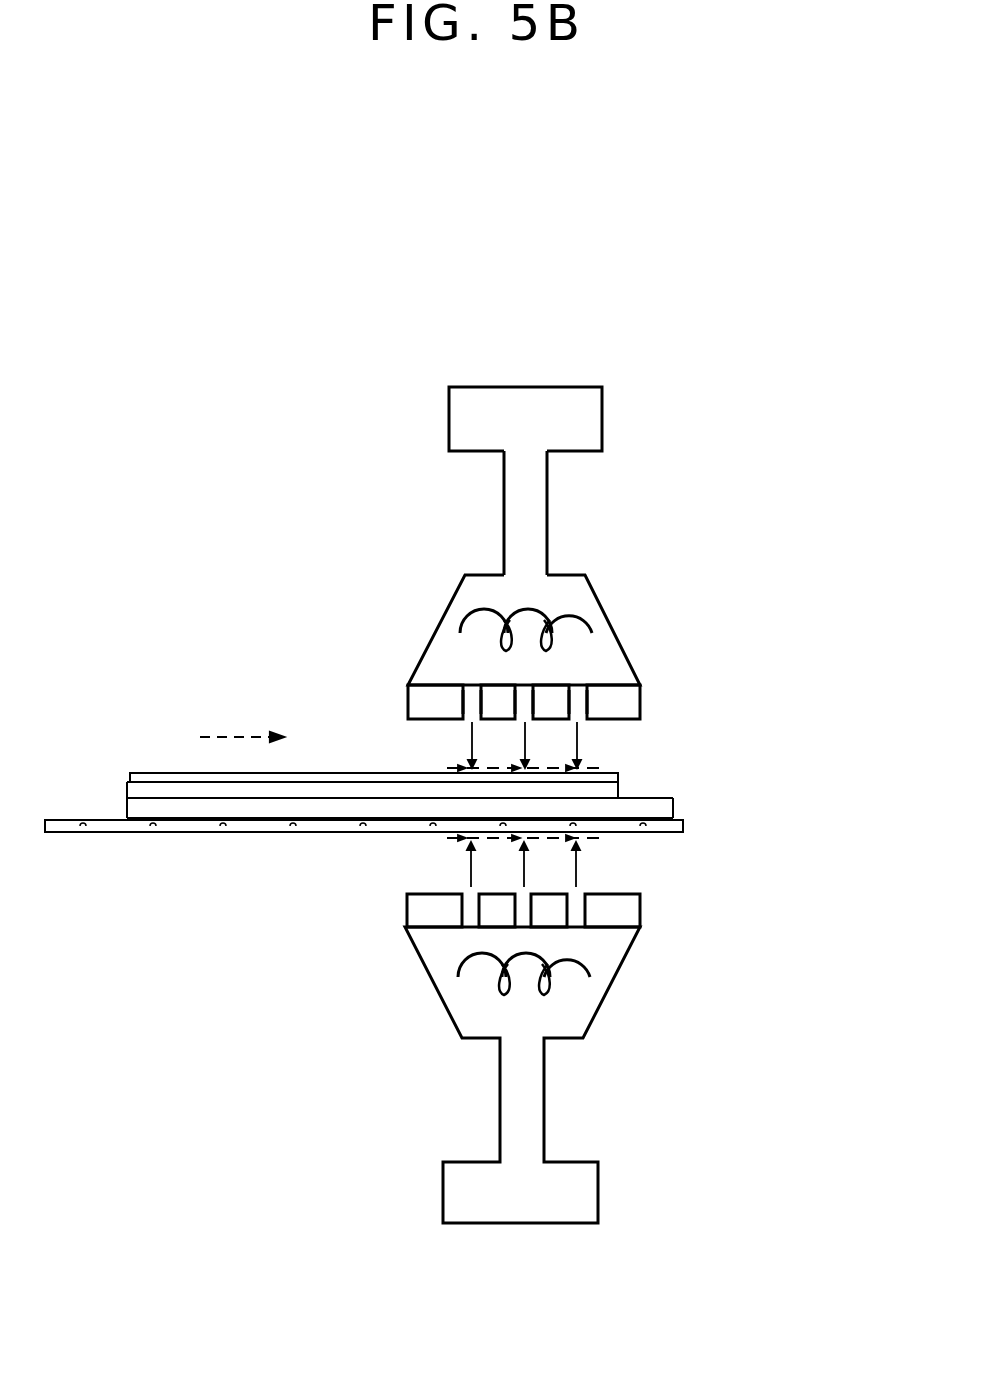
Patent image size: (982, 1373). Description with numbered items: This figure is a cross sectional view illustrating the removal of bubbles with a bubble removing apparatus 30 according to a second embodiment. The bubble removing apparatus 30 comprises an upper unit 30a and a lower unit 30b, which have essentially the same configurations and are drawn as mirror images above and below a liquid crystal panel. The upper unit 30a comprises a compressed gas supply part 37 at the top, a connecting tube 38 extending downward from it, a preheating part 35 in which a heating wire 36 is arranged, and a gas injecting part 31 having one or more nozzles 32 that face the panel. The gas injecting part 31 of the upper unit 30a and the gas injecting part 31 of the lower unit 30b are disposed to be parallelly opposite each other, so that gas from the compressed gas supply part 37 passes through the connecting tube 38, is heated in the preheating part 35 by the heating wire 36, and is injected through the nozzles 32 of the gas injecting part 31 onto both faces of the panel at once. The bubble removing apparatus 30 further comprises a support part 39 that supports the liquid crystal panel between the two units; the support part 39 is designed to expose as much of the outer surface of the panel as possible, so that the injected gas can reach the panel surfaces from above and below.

The bubble removing apparatus 30 is at (627, 805).
The upper unit 30a is at (600, 579).
The lower unit 30b is at (599, 1029).
The gas injecting part 31 is at (640, 693).
The nozzles 32 is at (592, 726).
The preheating part 35 is at (617, 657).
The heating wire 36 is at (592, 620).
The compressed gas supply part 37 is at (596, 423).
The connecting tube 38 is at (547, 535).
The support part 39 is at (177, 833).